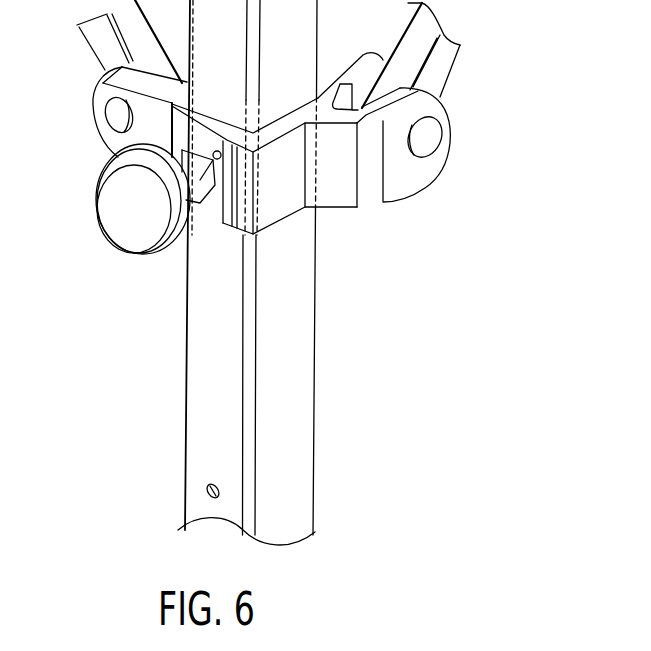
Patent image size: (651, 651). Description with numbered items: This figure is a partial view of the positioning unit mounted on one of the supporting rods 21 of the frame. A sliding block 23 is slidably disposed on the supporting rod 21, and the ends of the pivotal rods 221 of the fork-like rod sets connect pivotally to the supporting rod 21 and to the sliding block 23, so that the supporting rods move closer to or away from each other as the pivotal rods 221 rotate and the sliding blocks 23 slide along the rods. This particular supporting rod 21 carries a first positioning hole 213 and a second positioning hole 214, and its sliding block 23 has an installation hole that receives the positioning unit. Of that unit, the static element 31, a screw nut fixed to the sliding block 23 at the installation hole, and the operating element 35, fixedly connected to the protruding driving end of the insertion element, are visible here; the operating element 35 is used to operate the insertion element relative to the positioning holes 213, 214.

The supporting rod 21 is at (303, 371).
The first positioning hole 213 is at (211, 487).
The second positioning hole 214 is at (214, 151).
The pivotal rod 221 is at (105, 48).
The sliding block 23 is at (277, 208).
The static element 31 is at (198, 200).
The operating element 35 is at (121, 224).